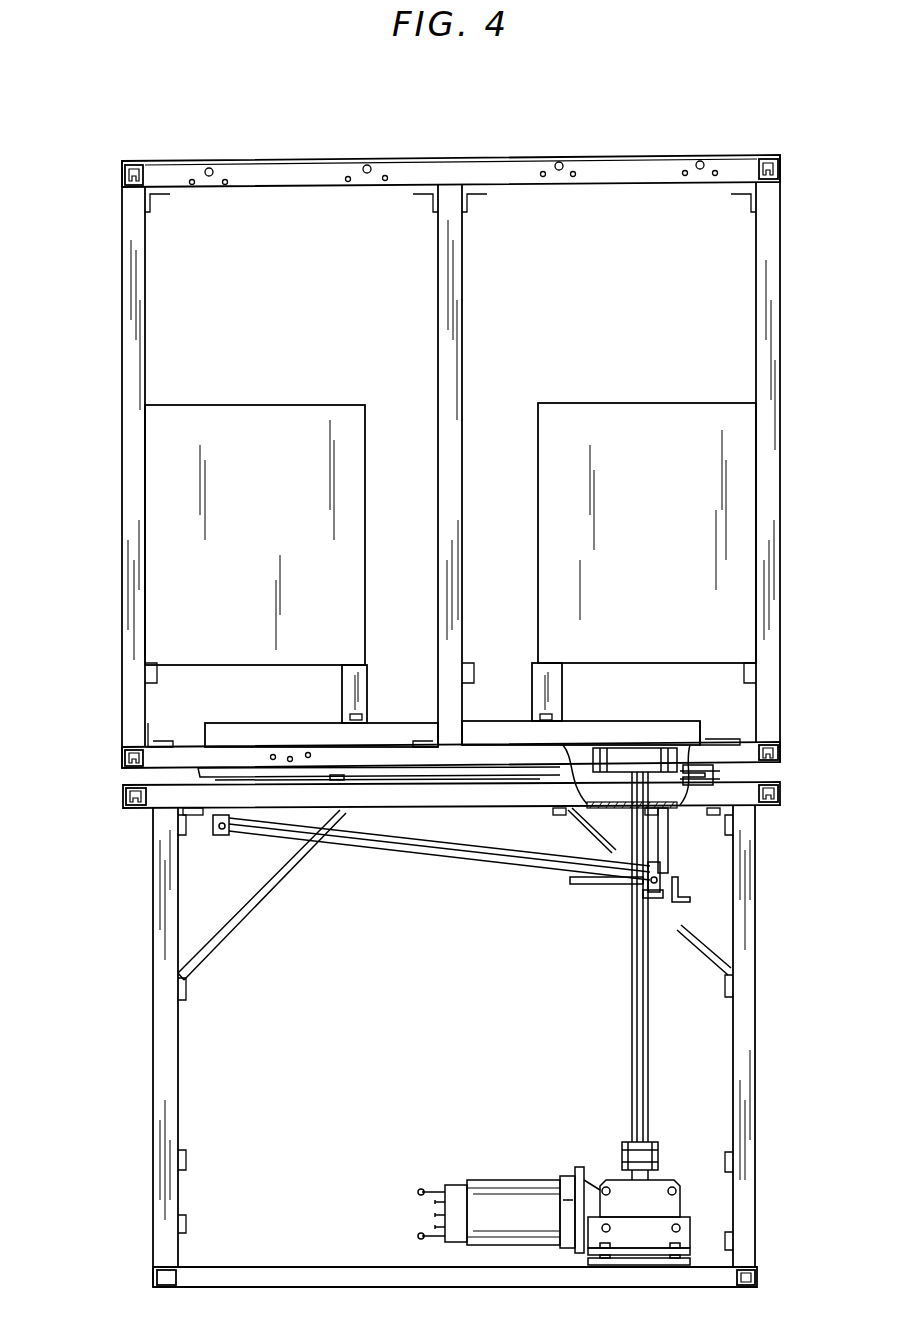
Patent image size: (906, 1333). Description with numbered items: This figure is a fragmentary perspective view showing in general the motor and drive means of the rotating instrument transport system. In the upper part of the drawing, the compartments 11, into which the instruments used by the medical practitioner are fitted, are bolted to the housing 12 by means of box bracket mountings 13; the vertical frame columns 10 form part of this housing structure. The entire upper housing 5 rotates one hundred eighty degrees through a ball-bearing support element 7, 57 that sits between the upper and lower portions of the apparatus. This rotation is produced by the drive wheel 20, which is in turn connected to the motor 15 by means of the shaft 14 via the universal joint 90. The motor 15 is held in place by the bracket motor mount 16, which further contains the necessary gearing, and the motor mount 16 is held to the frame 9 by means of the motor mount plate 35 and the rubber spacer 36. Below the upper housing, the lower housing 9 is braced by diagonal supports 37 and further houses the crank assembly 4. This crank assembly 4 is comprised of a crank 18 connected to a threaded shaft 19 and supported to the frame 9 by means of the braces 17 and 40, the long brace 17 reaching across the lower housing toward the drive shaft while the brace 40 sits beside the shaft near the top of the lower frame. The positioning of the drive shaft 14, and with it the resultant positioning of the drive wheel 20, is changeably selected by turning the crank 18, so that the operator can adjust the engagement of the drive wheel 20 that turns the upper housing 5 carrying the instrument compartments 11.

The crank assembly 4 is at (694, 839).
The upper housing 5 is at (280, 322).
The ball-bearing support element 7 is at (190, 772).
The lower housing 9 is at (172, 801).
The frame column 10 is at (134, 526).
The compartments 11 is at (163, 450).
The housing 12 is at (451, 461).
The box bracket mountings 13 is at (362, 691).
The shaft 14 is at (629, 998).
The motor 15 is at (532, 1179).
The bracket motor mount 16 is at (696, 1212).
The brace 17 is at (460, 870).
The crank 18 is at (681, 890).
The threaded shaft 19 is at (570, 881).
The drive wheel 20 is at (665, 756).
The motor mount plate 35 is at (690, 1266).
The rubber spacer 36 is at (690, 1252).
The supports 37 is at (248, 918).
The brace 40 is at (671, 851).
The ball-bearing support element 57 is at (700, 775).
The universal joint 90 is at (658, 1160).